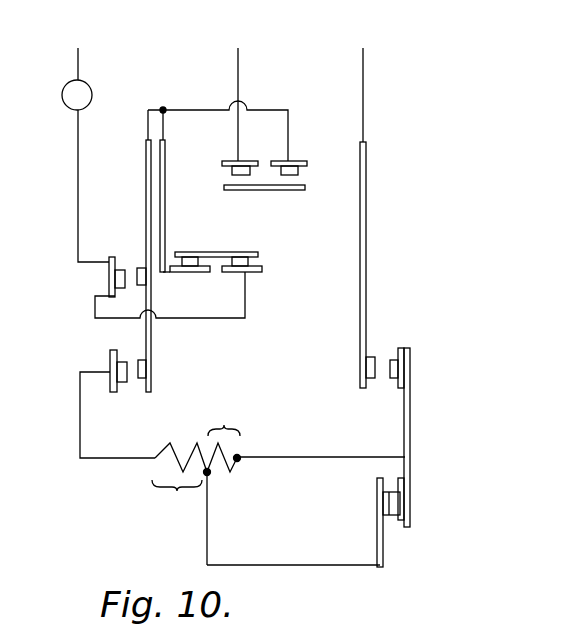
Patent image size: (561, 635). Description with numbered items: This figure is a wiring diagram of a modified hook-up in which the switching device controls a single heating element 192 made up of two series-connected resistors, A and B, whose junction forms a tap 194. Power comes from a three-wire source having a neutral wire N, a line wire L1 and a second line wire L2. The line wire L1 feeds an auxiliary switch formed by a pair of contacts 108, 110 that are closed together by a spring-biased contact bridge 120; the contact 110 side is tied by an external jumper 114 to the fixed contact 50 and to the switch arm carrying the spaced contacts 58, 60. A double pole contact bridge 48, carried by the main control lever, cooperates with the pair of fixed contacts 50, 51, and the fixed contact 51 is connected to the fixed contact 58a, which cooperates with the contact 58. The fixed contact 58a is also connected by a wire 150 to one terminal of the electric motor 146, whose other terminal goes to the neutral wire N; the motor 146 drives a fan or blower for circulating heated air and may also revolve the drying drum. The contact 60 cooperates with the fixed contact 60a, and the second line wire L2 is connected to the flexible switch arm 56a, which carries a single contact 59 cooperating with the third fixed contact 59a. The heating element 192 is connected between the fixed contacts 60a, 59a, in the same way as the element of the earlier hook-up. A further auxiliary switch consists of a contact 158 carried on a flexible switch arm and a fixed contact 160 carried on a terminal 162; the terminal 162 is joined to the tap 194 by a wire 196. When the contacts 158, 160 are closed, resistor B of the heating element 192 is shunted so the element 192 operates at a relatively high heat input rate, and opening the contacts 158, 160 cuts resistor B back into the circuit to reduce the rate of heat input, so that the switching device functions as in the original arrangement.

The neutral wire N is at (69, 53).
The line wire L1 is at (233, 93).
The second line wire L2 is at (360, 83).
The electric motor 146 is at (90, 84).
The wire 150 is at (79, 218).
The external jumper 114 is at (198, 109).
The contact 108 is at (230, 170).
The contact 110 is at (300, 170).
The contact bridge 120 is at (290, 191).
The double pole contact bridge 48 is at (226, 252).
The fixed contact 50 is at (190, 263).
The fixed contact 51 is at (245, 263).
The contact 58 is at (141, 268).
The fixed contact 58a is at (120, 298).
The contact 60 is at (150, 358).
The fixed contact 60a is at (112, 351).
The flexible switch arm 56a is at (367, 247).
The contact 59 is at (373, 358).
The third fixed contact 59a is at (394, 360).
The contact 158 is at (398, 490).
The fixed contact 160 is at (391, 492).
The terminal 162 is at (384, 552).
The heating element 192 is at (181, 445).
The tap 194 is at (211, 478).
The wire 196 is at (208, 543).